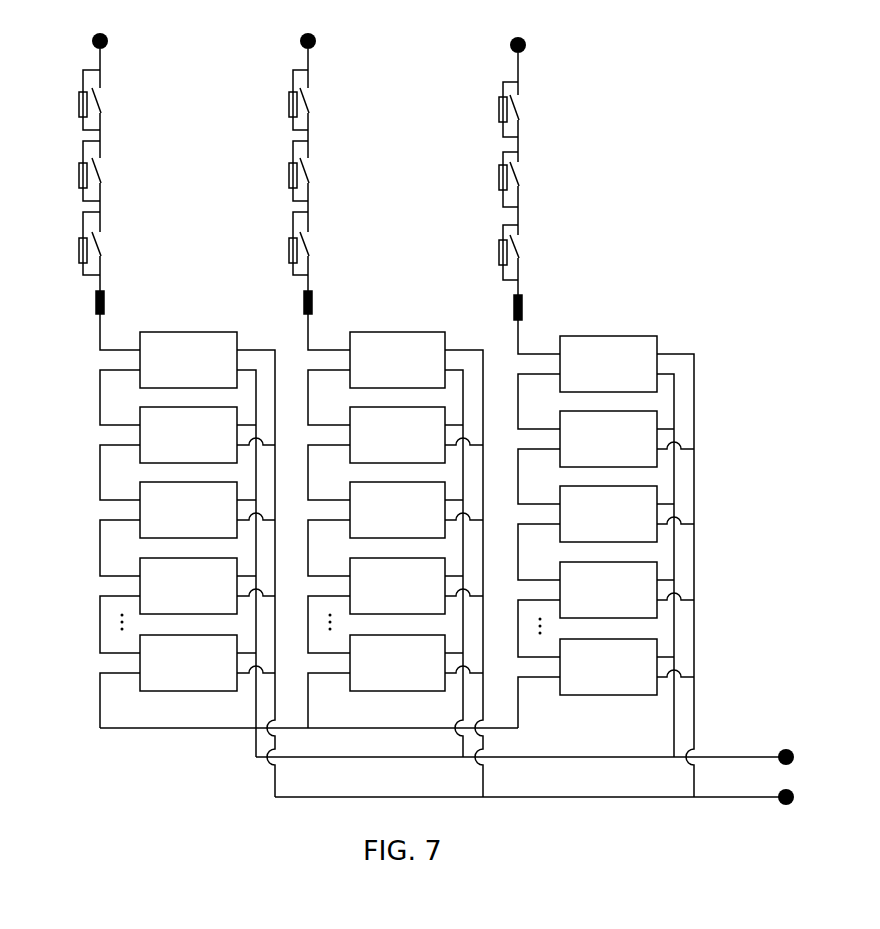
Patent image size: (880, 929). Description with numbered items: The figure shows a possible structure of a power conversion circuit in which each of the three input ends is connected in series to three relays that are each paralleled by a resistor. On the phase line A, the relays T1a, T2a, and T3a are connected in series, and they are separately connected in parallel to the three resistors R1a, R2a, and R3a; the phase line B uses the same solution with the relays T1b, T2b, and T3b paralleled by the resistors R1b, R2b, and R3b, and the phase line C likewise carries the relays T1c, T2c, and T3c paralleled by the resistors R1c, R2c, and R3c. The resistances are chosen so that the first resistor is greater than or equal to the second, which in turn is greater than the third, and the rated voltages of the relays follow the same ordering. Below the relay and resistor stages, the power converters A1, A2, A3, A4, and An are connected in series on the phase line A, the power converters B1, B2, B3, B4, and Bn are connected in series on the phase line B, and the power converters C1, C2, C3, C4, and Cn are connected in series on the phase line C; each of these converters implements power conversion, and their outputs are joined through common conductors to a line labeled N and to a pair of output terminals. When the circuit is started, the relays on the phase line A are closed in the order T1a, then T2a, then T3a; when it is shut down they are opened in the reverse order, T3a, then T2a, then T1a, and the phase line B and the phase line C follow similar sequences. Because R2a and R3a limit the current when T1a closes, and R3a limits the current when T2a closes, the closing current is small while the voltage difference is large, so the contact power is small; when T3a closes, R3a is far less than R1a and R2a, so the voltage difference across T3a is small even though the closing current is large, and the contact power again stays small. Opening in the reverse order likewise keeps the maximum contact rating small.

The phase line A is at (100, 48).
The phase line B is at (308, 48).
The phase line C is at (518, 53).
The resistor R1a is at (64, 100).
The resistor R2a is at (64, 171).
The resistor R3a is at (64, 243).
The relay T1a is at (131, 106).
The relay T2a is at (131, 175).
The relay T3a is at (131, 250).
The resistor R1b is at (267, 100).
The resistor R2b is at (267, 171).
The resistor R3b is at (267, 243).
The relay T1b is at (336, 106).
The relay T2b is at (336, 175).
The relay T3b is at (336, 250).
The resistor R1c is at (481, 110).
The resistor R2c is at (481, 180).
The resistor R3c is at (481, 253).
The relay T1c is at (549, 116).
The relay T2c is at (549, 185).
The relay T3c is at (549, 258).
The power converter A1 is at (188, 360).
The power converter A2 is at (188, 435).
The power converter A3 is at (188, 510).
The power converter A4 is at (188, 586).
The power converter An is at (188, 663).
The power converter B1 is at (397, 360).
The power converter B2 is at (397, 435).
The power converter B3 is at (397, 510).
The power converter B4 is at (397, 586).
The power converter Bn is at (397, 663).
The power converter C1 is at (608, 364).
The power converter C2 is at (608, 439).
The power converter C3 is at (608, 514).
The power converter C4 is at (608, 590).
The power converter Cn is at (608, 667).
The neutral line N is at (285, 740).